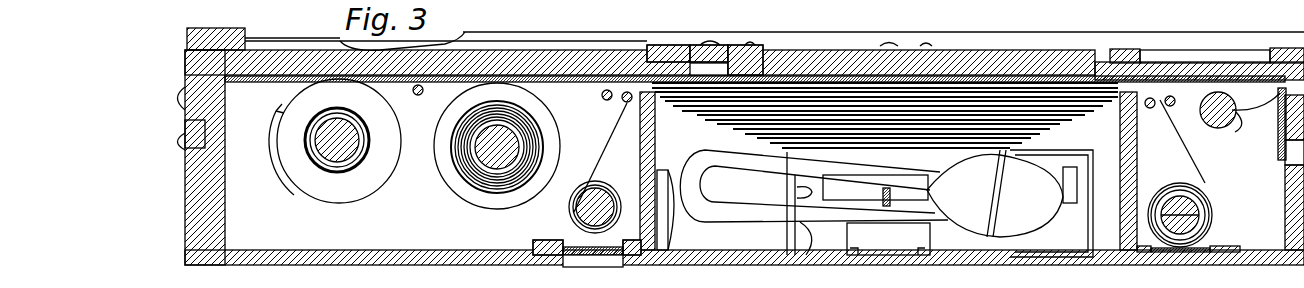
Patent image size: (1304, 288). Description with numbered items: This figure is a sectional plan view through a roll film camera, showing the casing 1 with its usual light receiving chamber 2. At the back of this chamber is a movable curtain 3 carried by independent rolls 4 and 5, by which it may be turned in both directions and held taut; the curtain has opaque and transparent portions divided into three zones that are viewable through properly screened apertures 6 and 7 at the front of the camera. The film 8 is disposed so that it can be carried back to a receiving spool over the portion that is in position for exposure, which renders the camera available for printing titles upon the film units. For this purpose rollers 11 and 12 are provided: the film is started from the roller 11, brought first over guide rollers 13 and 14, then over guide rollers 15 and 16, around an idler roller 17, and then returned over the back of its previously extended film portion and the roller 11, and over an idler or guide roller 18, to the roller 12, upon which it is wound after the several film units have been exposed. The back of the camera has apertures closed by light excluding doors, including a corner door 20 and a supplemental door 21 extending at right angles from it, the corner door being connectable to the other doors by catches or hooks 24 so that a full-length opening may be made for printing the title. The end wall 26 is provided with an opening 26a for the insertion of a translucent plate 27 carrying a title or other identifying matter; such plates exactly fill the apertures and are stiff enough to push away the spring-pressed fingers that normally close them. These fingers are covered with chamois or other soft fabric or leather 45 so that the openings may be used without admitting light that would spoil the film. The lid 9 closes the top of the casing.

The casing 1 is at (256, 241).
The light receiving chamber 2 is at (985, 123).
The movable curtain 3 is at (820, 92).
The roll 4 is at (600, 190).
The roll 5 is at (1174, 200).
The aperture 6 is at (578, 260).
The aperture 7 is at (1172, 262).
The film 8 is at (968, 87).
The lid 9 is at (536, 62).
The roller 11 is at (492, 168).
The roller 12 is at (333, 158).
The guide roller 13 is at (602, 99).
The guide roller 14 is at (625, 103).
The guide roller 15 is at (1172, 107).
The guide roller 16 is at (1151, 109).
The idler roller 17 is at (1242, 128).
The idler or guide roller 18 is at (418, 96).
The corner door 20 is at (698, 47).
The supplemental door 21 is at (890, 52).
The catches or hooks 24 is at (731, 45).
The end wall 26 is at (1290, 186).
The opening 26a is at (1268, 157).
The translucent sheets or plates 27 is at (832, 76).
The chamois or soft fabric or leather 45 is at (1288, 48).